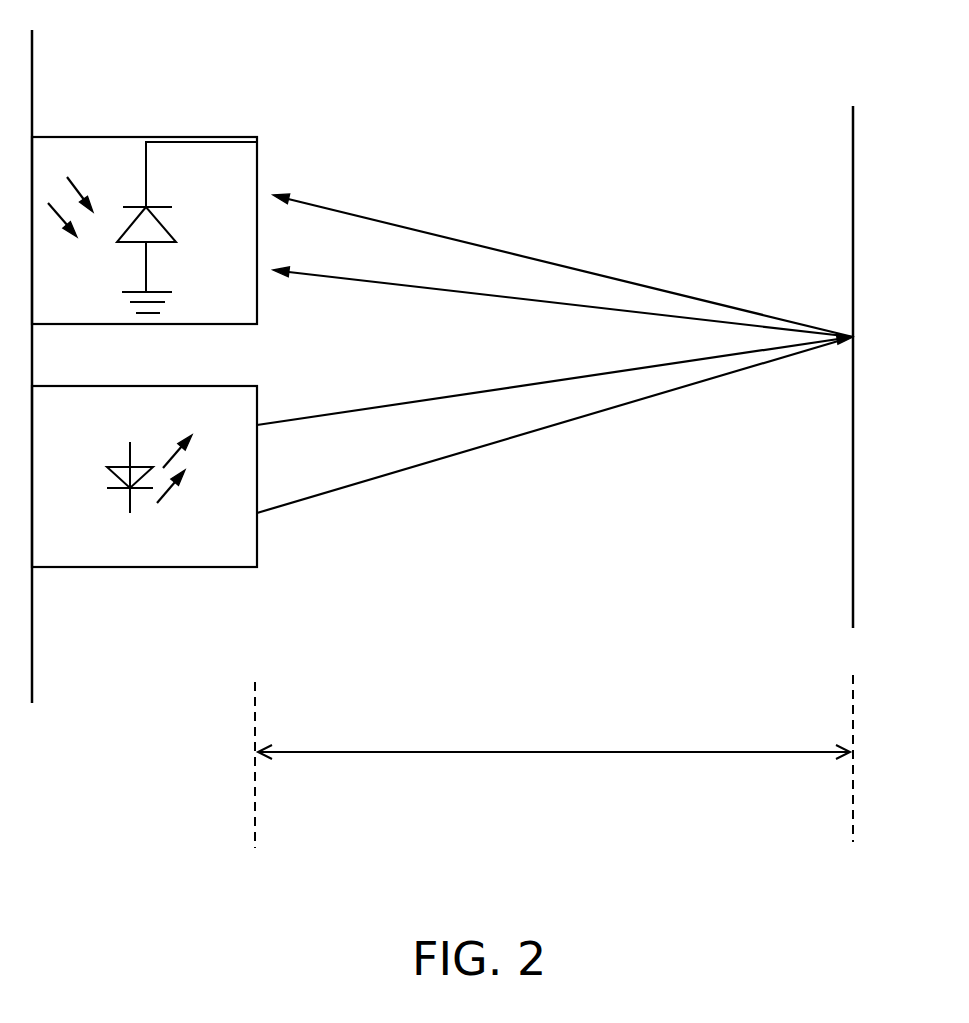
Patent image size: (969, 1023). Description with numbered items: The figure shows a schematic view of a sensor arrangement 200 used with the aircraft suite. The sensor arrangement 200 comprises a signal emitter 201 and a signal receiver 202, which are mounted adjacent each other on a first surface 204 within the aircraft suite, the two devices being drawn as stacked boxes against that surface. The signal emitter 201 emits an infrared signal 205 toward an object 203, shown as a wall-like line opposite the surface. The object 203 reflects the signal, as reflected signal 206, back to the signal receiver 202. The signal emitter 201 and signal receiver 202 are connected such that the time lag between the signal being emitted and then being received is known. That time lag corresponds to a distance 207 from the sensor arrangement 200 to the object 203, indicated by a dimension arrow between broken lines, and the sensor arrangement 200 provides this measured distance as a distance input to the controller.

The sensor arrangement 200 is at (255, 112).
The signal emitter 201 is at (210, 552).
The signal receiver 202 is at (243, 165).
The object 203 is at (853, 510).
The first surface 204 is at (32, 650).
The infrared signal 205 is at (543, 433).
The reflected signal 206 is at (553, 260).
The distance 207 is at (554, 761).